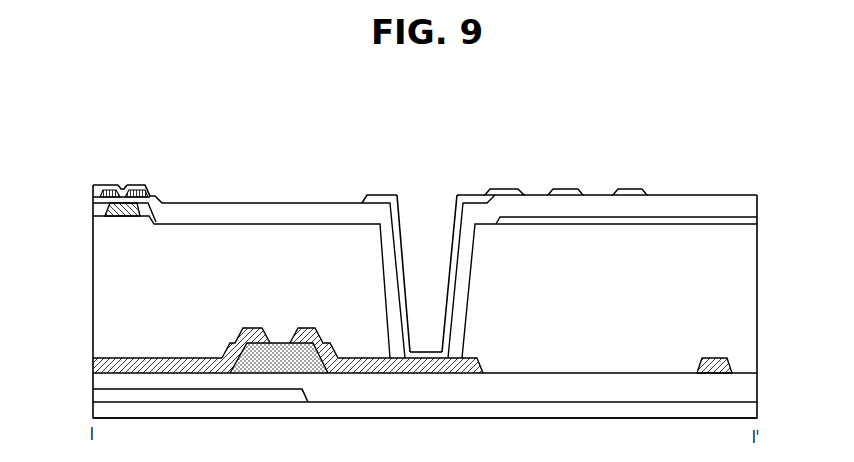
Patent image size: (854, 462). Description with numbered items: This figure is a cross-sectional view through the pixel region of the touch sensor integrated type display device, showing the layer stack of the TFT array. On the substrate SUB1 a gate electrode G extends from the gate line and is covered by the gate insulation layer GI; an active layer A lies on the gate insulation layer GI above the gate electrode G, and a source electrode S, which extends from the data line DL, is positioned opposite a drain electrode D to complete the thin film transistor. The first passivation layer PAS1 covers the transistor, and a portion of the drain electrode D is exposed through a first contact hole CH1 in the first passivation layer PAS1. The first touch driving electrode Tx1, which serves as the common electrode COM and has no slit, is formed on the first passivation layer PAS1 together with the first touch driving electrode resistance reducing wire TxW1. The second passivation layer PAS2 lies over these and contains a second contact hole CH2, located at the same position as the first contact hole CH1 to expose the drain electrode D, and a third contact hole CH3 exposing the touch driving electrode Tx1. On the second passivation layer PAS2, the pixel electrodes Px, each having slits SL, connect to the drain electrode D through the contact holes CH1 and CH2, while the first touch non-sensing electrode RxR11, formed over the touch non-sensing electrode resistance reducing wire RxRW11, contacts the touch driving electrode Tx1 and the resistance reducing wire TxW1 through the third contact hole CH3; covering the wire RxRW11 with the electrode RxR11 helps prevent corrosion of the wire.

The third contact hole CH3 is at (123, 181).
The first touch non-sensing electrode RxR11 is at (107, 182).
The touch non-sensing electrode resistance reducing wire RxRW11 is at (157, 158).
The first touch driving electrode resistance reducing wire TxW1 is at (107, 210).
The first touch driving electrode Tx1 is at (100, 222).
The common electrode COM is at (422, 237).
The second contact hole CH2 is at (427, 234).
The first contact hole CH1 is at (428, 197).
The pixel electrode Px is at (630, 189).
The slit SL is at (600, 194).
The second passivation layer PAS2 is at (757, 196).
The first passivation layer PAS1 is at (757, 296).
The data line DL is at (735, 362).
The gate insulation layer GI is at (757, 388).
The substrate SUB1 is at (757, 410).
The source electrode S is at (218, 374).
The active layer A is at (240, 374).
The gate electrode G is at (278, 393).
The drain electrode D is at (383, 374).